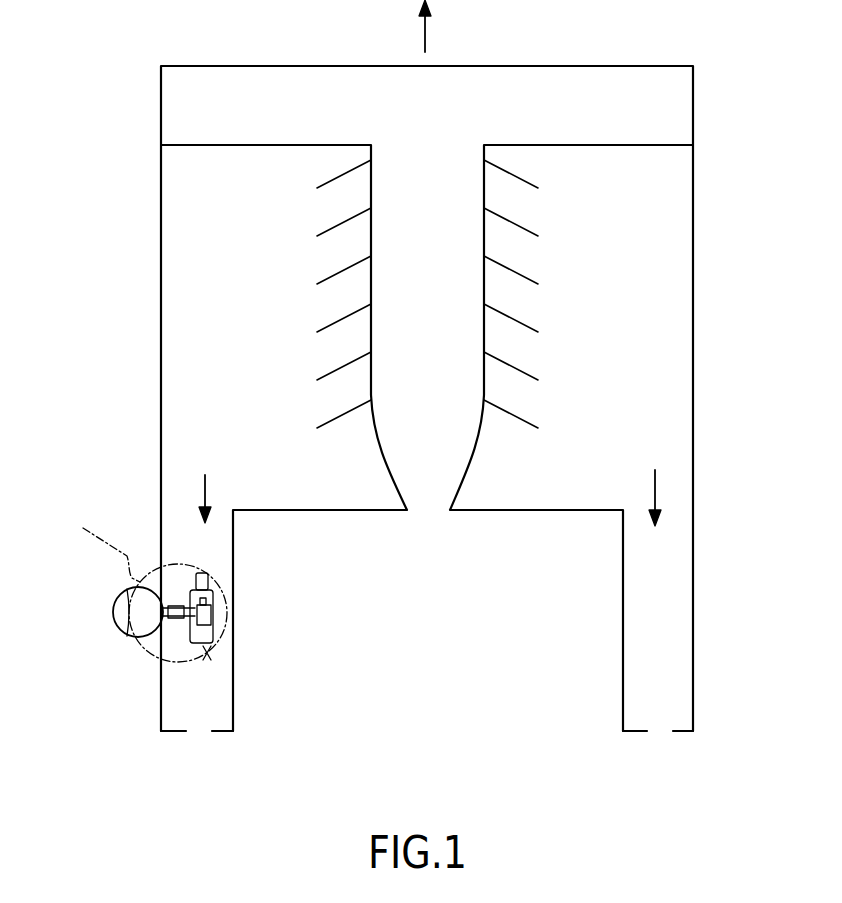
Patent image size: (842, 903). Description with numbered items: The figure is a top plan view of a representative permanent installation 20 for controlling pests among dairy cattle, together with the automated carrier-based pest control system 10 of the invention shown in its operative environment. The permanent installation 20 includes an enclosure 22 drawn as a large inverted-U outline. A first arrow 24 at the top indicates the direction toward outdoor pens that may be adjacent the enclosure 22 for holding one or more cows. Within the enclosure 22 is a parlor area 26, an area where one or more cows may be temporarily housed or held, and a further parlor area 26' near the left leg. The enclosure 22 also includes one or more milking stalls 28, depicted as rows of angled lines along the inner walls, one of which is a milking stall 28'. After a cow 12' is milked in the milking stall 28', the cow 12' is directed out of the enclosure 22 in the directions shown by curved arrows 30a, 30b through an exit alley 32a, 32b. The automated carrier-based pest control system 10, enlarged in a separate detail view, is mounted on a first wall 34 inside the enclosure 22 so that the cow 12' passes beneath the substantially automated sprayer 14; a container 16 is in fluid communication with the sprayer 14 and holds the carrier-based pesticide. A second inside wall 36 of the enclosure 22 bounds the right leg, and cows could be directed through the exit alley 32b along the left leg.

The automated carrier-based pest control system 10 is at (67, 489).
The cow 12' is at (225, 594).
The substantially automated sprayer 14 is at (210, 618).
The container 16 is at (113, 625).
The permanent installation 20 is at (122, 79).
The enclosure 22 is at (636, 84).
The first arrow 24 is at (425, 35).
The parlor area 26 is at (715, 109).
The parlor area 26' is at (264, 543).
The milking stalls 28 is at (470, 222).
The milking stall 28' is at (474, 366).
The curved arrow 30a is at (565, 452).
The curved arrow 30b is at (292, 450).
The exit alley 32a is at (675, 658).
The exit alley 32b is at (185, 683).
The first wall 34 is at (164, 523).
The second inside wall 36 is at (686, 600).